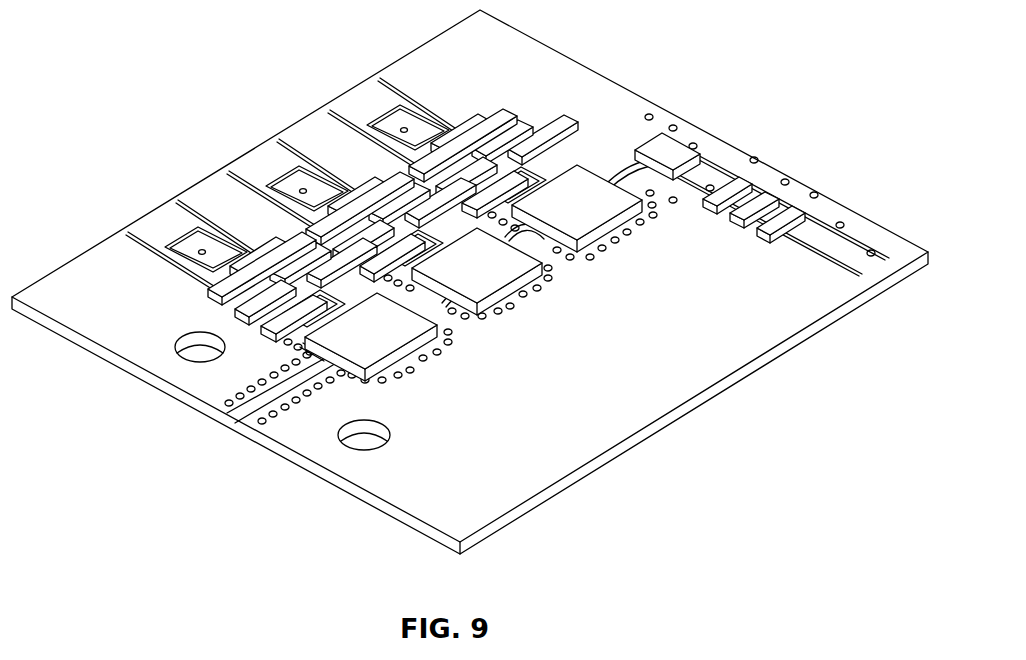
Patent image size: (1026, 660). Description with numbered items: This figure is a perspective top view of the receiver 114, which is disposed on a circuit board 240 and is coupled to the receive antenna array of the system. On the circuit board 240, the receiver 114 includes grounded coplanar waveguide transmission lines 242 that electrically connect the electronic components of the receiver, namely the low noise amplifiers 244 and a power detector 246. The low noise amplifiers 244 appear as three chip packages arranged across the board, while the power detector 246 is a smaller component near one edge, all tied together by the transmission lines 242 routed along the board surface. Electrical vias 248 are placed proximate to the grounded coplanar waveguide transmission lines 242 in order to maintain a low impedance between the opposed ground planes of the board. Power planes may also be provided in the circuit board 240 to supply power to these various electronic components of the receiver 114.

The receiver 114 is at (470, 299).
The circuit board 240 is at (735, 349).
The grounded coplanar waveguide transmission lines 242 is at (242, 388).
The low noise amplifiers 244 is at (585, 193).
The power detector 246 is at (670, 143).
The electrical vias 248 is at (431, 358).